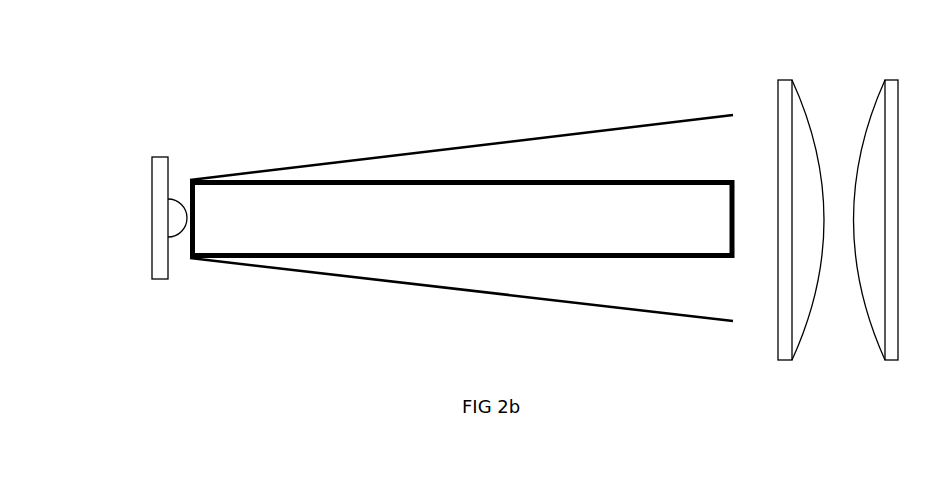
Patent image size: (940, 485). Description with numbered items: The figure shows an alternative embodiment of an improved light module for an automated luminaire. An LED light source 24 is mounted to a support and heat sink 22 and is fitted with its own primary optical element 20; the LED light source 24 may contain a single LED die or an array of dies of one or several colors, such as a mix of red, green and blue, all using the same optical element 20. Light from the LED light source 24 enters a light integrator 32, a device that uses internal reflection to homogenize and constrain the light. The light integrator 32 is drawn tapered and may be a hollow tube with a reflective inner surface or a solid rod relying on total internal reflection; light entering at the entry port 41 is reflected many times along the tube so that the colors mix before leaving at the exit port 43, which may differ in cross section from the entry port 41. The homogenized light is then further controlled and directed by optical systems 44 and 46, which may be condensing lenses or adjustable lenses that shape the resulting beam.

The optical element 20 is at (177, 217).
The support and heat sink 22 is at (160, 165).
The LED light source 24 is at (172, 197).
The light integrator 32 is at (655, 315).
The entry port 41 is at (197, 221).
The exit port 43 is at (735, 128).
The optical system 44 is at (785, 80).
The optical system 46 is at (890, 80).